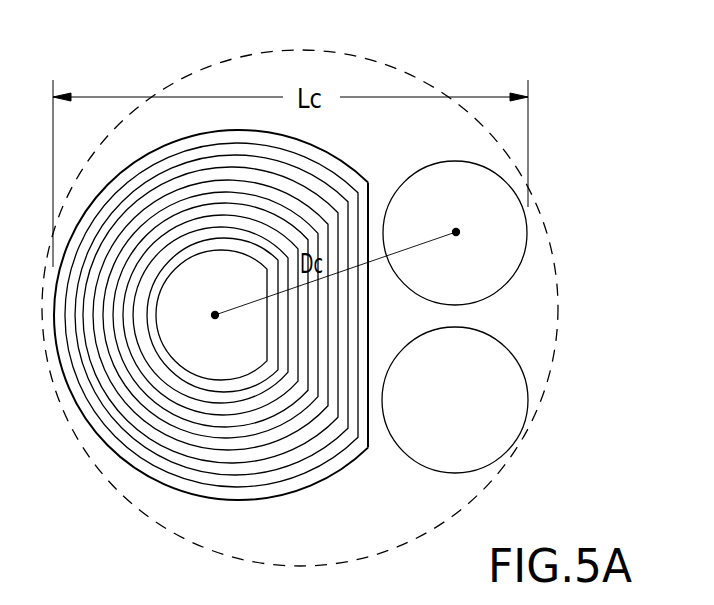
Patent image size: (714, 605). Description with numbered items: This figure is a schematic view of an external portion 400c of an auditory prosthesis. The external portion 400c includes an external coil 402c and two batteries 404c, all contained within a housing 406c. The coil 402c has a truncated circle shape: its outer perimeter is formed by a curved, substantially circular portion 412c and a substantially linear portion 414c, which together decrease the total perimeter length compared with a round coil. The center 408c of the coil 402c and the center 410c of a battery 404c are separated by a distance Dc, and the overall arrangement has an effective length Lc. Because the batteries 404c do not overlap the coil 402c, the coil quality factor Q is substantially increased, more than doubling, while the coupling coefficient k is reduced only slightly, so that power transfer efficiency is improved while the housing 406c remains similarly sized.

The external portion 400c is at (600, 82).
The external coil 402c is at (240, 452).
The batteries 404c is at (480, 288).
The housing 406c is at (557, 322).
The center 408c is at (213, 313).
The center 410c is at (458, 229).
The curved portion 412c is at (143, 176).
The substantially linear portion 414c is at (372, 304).